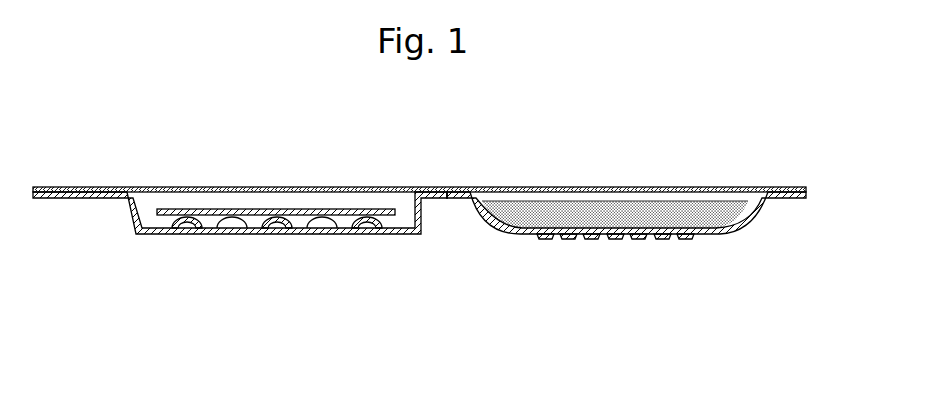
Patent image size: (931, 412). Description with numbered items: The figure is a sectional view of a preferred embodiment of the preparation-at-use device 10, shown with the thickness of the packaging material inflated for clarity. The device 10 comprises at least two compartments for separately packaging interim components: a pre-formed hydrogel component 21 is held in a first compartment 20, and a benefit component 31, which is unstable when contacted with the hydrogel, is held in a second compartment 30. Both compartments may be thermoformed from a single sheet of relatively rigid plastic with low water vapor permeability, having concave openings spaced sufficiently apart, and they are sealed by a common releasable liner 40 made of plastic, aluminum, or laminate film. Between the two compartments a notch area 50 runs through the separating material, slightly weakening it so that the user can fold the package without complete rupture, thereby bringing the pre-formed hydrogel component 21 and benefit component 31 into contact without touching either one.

The device 10 is at (157, 134).
The first compartment 20 is at (129, 212).
The pre-formed hydrogel component 21 is at (220, 208).
The second compartment 30 is at (757, 218).
The benefit component 31 is at (633, 216).
The releasable liner 40 is at (688, 190).
The notch area 50 is at (447, 203).